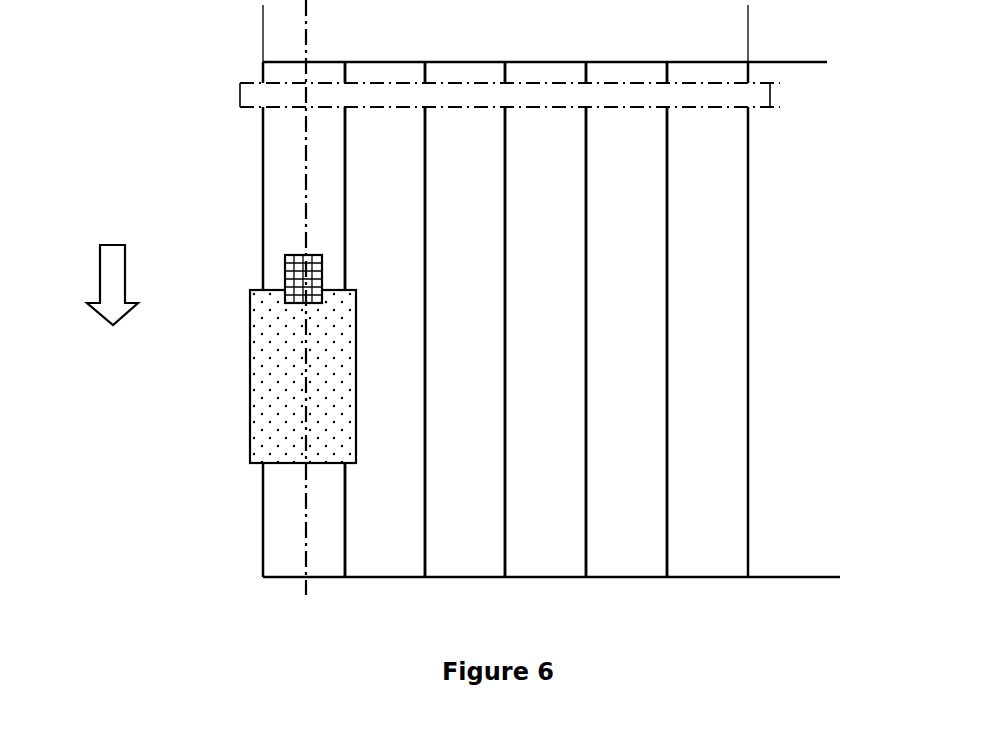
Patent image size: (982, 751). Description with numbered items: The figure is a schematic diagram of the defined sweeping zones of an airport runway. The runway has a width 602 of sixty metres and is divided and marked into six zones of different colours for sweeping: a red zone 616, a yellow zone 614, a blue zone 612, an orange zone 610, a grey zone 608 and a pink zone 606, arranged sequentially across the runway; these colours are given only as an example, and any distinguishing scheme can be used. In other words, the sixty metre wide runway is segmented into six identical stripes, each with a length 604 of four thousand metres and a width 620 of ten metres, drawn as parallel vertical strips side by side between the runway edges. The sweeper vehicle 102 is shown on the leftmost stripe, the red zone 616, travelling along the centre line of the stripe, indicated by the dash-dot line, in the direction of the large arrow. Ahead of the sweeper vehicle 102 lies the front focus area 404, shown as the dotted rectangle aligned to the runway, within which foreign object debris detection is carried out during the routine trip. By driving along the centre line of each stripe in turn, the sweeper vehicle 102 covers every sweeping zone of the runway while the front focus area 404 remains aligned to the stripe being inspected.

The sweeper vehicle 102 is at (285, 255).
The front focus area 404 is at (262, 452).
The width 602 is at (748, 28).
The length 604 is at (806, 577).
The pink sweeping zone 606 is at (712, 543).
The grey sweeping zone 608 is at (620, 533).
The orange sweeping zone 610 is at (551, 530).
The blue sweeping zone 612 is at (466, 520).
The yellow sweeping zone 614 is at (388, 520).
The red sweeping zone 616 is at (285, 553).
The width of stripe 620 is at (345, 153).